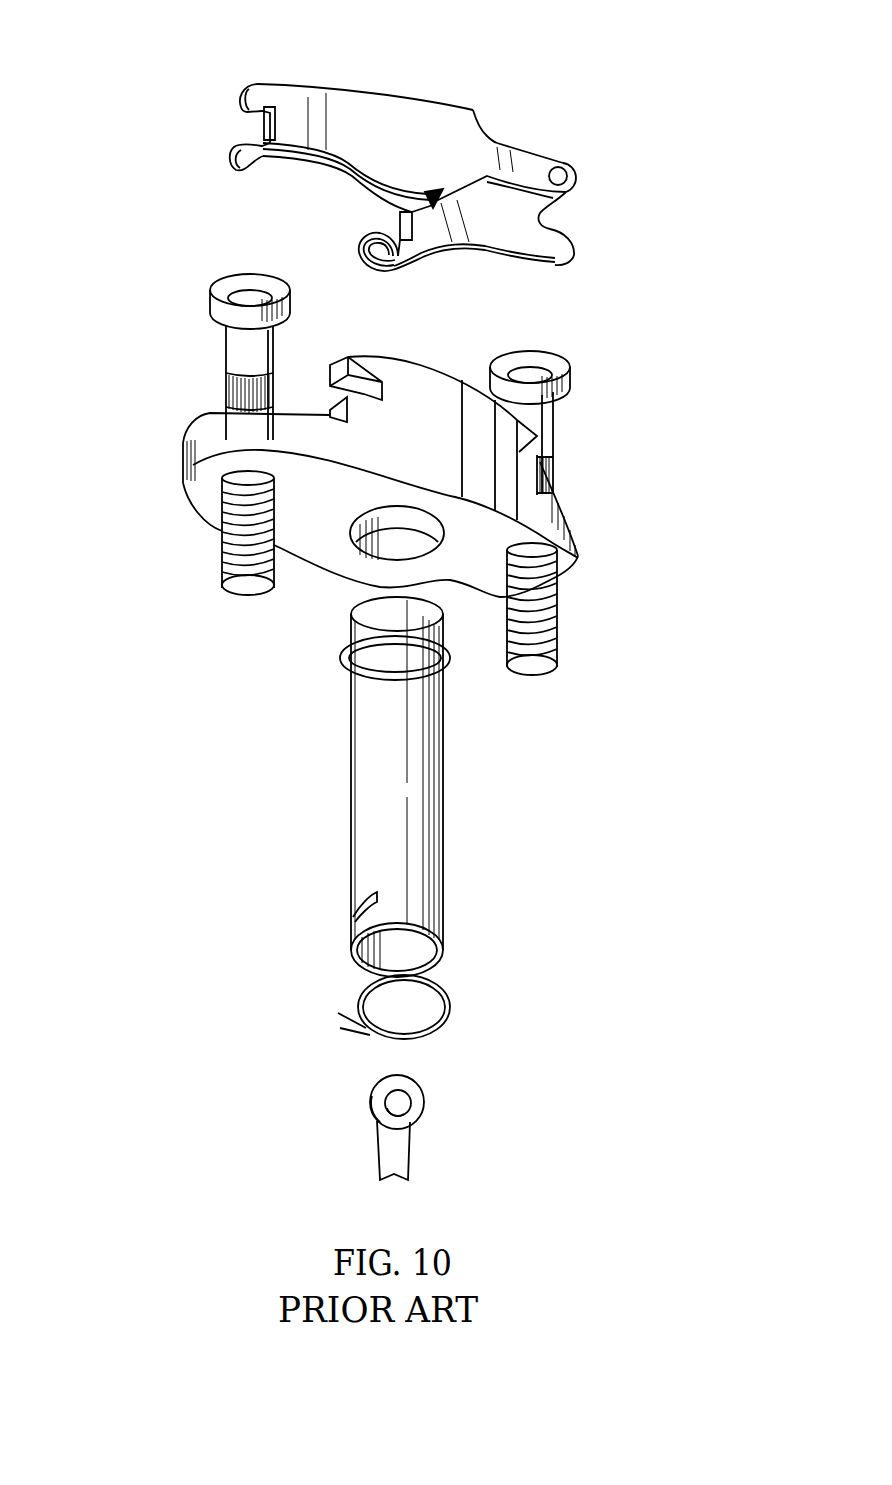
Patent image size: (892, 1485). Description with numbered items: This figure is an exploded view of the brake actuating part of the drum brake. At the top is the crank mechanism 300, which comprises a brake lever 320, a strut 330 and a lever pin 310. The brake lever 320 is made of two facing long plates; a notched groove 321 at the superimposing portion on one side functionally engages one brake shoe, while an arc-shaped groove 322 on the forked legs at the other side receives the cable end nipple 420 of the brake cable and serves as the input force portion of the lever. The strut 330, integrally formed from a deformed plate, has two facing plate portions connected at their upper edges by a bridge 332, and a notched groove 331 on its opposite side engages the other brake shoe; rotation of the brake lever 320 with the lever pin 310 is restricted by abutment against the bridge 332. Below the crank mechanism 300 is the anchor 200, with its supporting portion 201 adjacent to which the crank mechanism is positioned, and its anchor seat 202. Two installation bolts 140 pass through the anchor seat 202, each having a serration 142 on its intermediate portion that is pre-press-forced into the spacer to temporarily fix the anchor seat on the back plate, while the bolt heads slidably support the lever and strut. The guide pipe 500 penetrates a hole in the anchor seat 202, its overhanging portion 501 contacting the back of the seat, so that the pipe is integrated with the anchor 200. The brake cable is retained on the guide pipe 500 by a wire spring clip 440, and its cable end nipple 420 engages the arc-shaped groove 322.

The crank mechanism 300 is at (410, 151).
The strut 330 is at (371, 93).
The notched groove 331 is at (257, 120).
The bridge 332 is at (468, 110).
The lever pin 310 is at (574, 170).
The notched groove 321 is at (550, 217).
The brake lever 320 is at (572, 240).
The arc-shaped groove 322 is at (384, 259).
The anchor 200 is at (435, 435).
The supporting portion 201 is at (474, 403).
The anchor seat 202 is at (579, 530).
The serration 142 is at (227, 384).
The installation bolt 140 is at (392, 477).
The guide pipe 500 is at (413, 787).
The overhanging portion 501 is at (371, 640).
The wire spring clip 440 is at (358, 997).
The cable end nipple 420 is at (370, 1099).